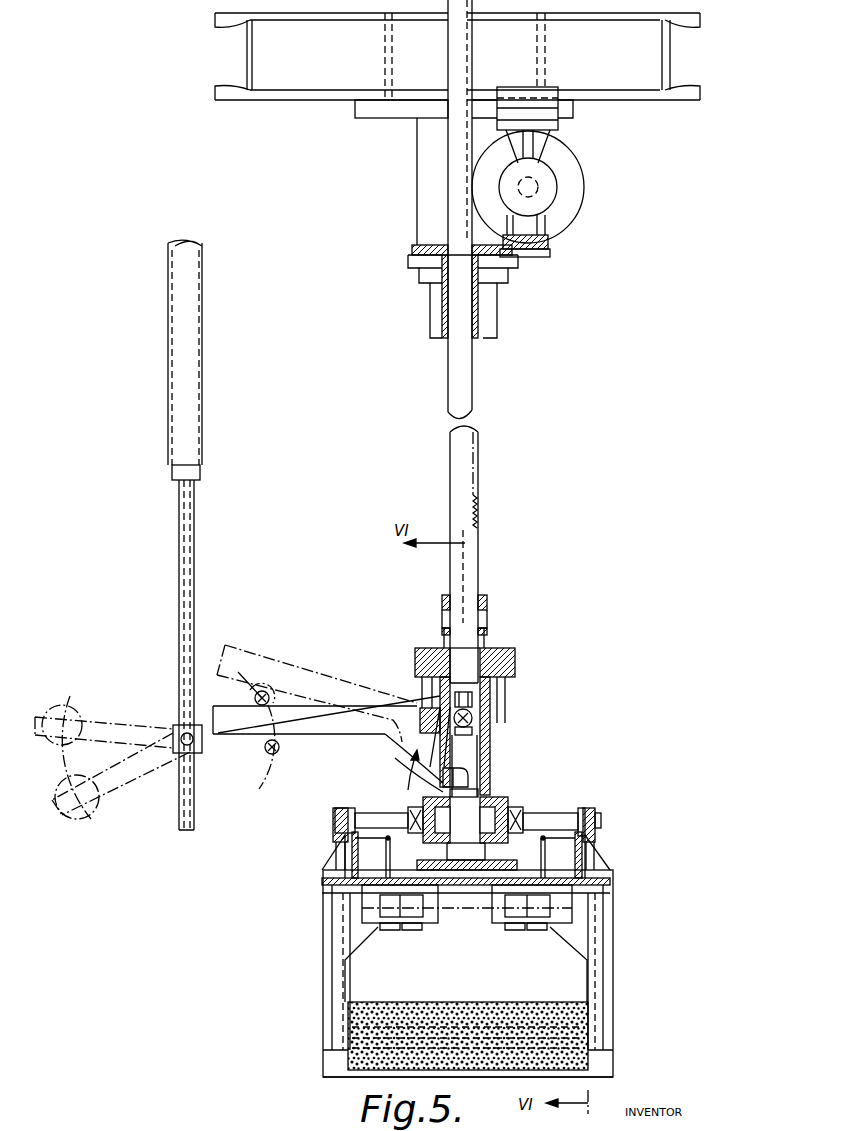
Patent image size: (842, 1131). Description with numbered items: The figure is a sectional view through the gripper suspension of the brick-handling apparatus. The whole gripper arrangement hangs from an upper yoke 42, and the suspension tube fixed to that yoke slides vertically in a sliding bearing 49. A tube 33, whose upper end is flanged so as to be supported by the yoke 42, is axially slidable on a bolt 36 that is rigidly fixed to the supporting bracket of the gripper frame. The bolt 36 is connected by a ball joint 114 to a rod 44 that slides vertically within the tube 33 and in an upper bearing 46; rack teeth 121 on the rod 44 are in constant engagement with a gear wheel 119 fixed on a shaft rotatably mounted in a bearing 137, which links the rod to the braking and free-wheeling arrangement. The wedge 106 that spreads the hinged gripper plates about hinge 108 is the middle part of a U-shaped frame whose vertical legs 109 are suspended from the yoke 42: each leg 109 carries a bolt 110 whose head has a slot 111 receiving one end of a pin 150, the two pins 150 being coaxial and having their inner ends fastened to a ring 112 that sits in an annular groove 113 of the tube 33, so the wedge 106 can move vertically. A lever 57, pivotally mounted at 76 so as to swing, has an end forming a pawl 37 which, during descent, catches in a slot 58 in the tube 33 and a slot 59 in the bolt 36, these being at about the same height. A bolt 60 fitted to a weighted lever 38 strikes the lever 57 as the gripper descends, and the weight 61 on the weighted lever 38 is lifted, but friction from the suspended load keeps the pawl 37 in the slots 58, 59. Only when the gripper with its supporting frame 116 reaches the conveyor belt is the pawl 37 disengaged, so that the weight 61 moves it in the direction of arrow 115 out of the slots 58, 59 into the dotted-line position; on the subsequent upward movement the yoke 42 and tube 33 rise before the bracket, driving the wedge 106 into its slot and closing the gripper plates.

The tube 33 is at (491, 731).
The bolt 36 is at (478, 758).
The pawl 37 is at (468, 778).
The weighted lever 38 is at (225, 752).
The upper yoke 42 is at (515, 668).
The rod 44 is at (470, 561).
The upper bearing 46 is at (442, 312).
The sliding bearing 49 is at (425, 179).
The lever 57 is at (303, 717).
The slot 58 is at (440, 790).
The slot 59 is at (480, 796).
The bolt 60 is at (273, 755).
The weight 61 is at (58, 714).
The pivot 76 is at (421, 700).
The wedge 106 is at (590, 1028).
The hinge 108 is at (330, 992).
The vertical leg 109 is at (345, 932).
The bolt 110 is at (335, 838).
The slot 111 is at (600, 820).
The ring 112 is at (508, 810).
The annular groove 113 is at (432, 810).
The ball joint 114 is at (474, 700).
The arrow 115 is at (408, 760).
The supporting frame 116 is at (330, 1065).
The gear wheel 119 is at (585, 185).
The rack teeth 121 is at (480, 517).
The bearing 137 is at (548, 197).
The pin 150 is at (372, 813).